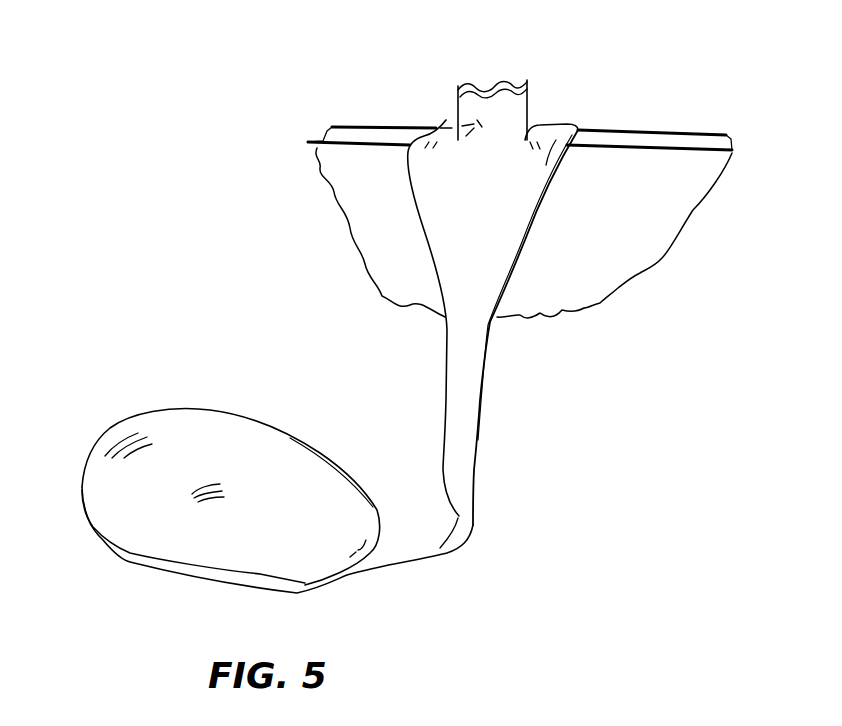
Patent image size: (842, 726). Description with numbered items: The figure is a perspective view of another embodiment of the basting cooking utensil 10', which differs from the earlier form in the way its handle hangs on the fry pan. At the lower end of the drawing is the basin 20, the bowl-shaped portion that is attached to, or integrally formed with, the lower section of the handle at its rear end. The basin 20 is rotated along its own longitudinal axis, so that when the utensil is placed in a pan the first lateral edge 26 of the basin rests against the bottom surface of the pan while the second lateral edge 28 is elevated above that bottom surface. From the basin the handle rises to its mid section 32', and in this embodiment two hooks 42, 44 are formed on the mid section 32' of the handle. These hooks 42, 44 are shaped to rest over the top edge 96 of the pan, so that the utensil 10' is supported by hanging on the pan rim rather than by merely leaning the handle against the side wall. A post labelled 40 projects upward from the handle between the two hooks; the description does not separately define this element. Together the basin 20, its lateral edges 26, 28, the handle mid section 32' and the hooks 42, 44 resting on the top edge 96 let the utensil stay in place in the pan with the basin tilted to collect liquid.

The basting cooking utensil 10' is at (437, 326).
The basin 20 is at (182, 390).
The first lateral edge 26 is at (167, 573).
The second lateral edge 28 is at (282, 430).
The mid section 32' is at (553, 327).
The stem / post 40 is at (578, 75).
The hook 42 is at (567, 120).
The hook 44 is at (444, 122).
The top edge 96 is at (690, 133).